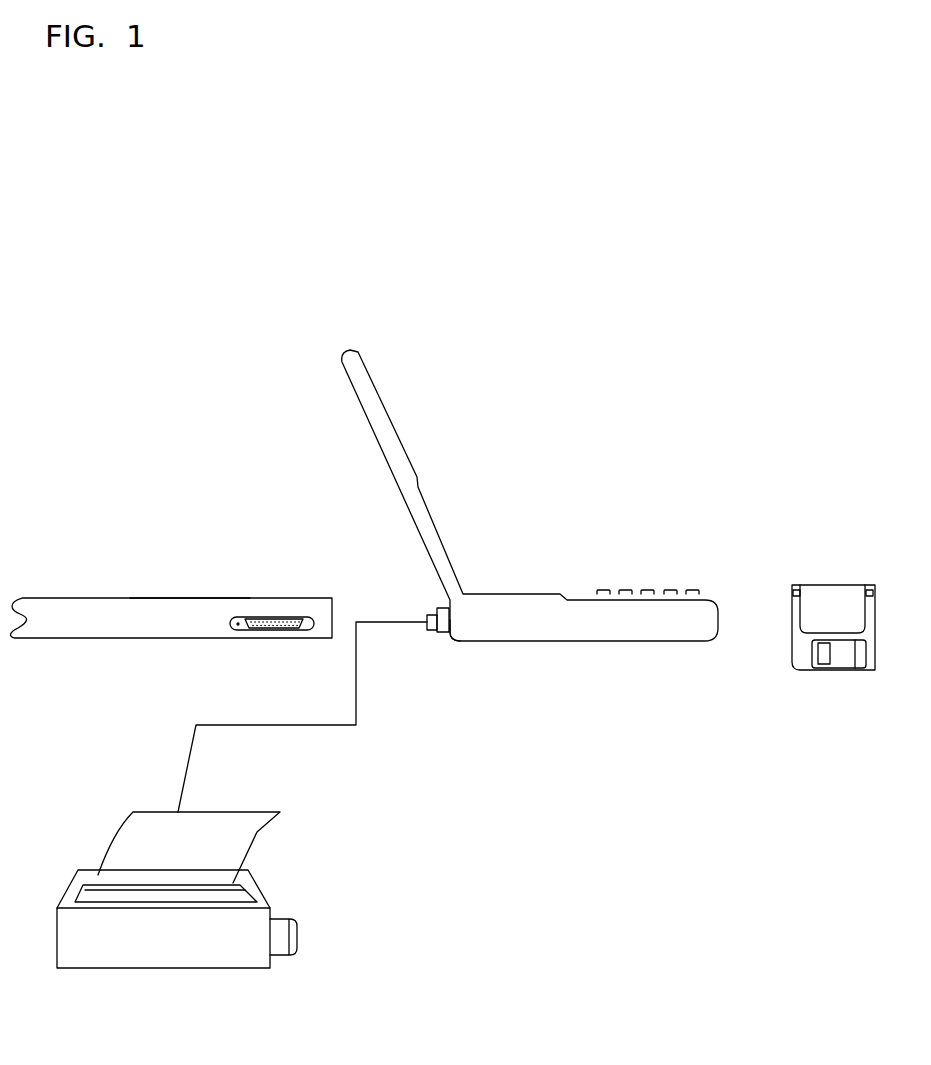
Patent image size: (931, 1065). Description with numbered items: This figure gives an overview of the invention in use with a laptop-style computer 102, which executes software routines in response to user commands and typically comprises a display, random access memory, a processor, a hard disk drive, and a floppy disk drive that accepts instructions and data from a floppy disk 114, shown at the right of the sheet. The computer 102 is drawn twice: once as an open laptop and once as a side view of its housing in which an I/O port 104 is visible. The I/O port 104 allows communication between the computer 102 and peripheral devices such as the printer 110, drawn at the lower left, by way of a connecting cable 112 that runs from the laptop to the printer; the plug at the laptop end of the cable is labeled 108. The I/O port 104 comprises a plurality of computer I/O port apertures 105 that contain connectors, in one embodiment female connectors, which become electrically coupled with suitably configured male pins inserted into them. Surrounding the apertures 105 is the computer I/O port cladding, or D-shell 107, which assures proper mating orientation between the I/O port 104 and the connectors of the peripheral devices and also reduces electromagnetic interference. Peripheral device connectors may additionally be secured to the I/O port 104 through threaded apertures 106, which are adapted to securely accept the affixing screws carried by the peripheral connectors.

The computer 102 is at (70, 597).
The I/O port 104 is at (188, 597).
The computer I/O port apertures 105 is at (258, 629).
The threaded apertures 106 is at (306, 626).
The D-shell 107 is at (249, 618).
The cable connector 108 is at (434, 608).
The printer 110 is at (251, 812).
The connecting cable 112 is at (360, 714).
The floppy disk 114 is at (809, 585).